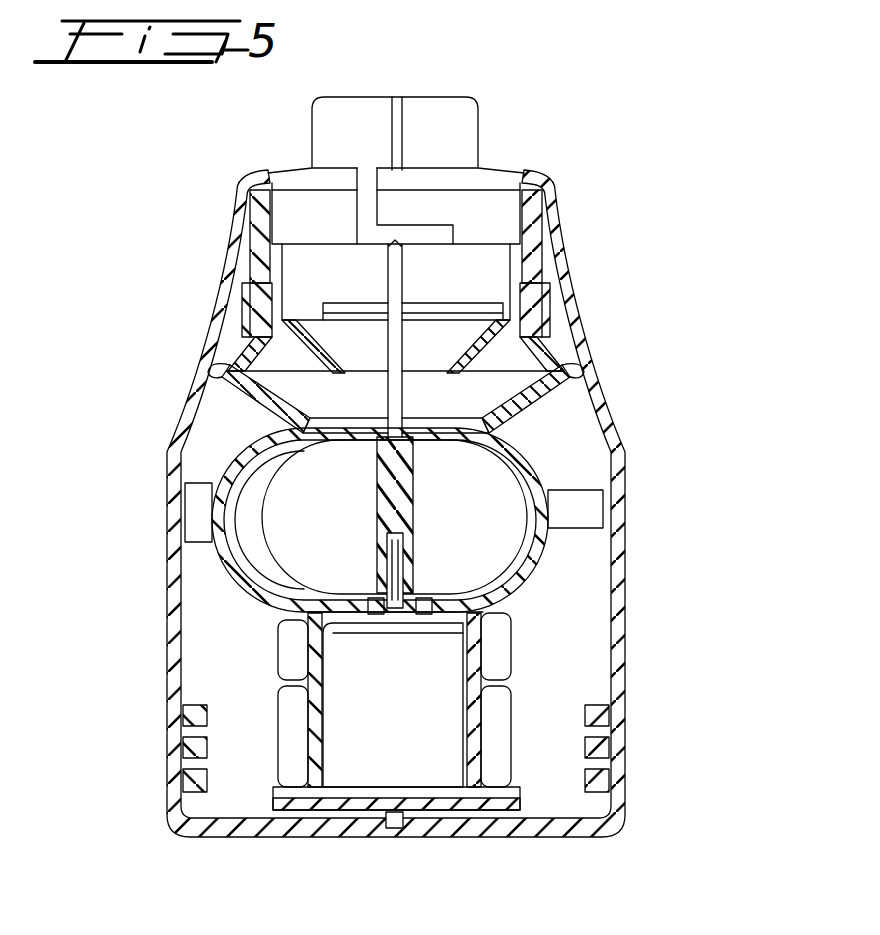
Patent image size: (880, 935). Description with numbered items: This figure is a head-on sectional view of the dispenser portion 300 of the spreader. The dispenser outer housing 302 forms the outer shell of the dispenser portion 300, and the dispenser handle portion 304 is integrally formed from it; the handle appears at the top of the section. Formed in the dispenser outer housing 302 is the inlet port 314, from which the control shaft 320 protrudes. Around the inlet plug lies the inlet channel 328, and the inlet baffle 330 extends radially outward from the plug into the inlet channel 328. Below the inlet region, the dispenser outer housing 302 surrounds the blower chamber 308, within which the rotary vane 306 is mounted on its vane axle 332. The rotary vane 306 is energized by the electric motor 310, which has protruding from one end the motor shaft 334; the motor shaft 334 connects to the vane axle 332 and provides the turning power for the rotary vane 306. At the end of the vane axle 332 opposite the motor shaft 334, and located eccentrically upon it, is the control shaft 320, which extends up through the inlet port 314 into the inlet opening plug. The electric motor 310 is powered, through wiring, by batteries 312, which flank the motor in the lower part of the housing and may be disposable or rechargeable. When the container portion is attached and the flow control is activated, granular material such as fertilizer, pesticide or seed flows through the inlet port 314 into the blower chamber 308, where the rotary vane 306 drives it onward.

The dispenser portion 300 is at (172, 305).
The dispenser outer housing 302 is at (560, 248).
The dispenser handle portion 304 is at (458, 113).
The rotary vane 306 is at (280, 542).
The blower chamber 308 is at (262, 463).
The electric motor 310 is at (440, 768).
The batteries 312 is at (497, 665).
The inlet port 314 is at (493, 208).
The control shaft 320 is at (396, 376).
The inlet channel 328 is at (247, 253).
The inlet baffle 330 is at (210, 362).
The vane axle 332 is at (400, 502).
The motor shaft 334 is at (400, 563).